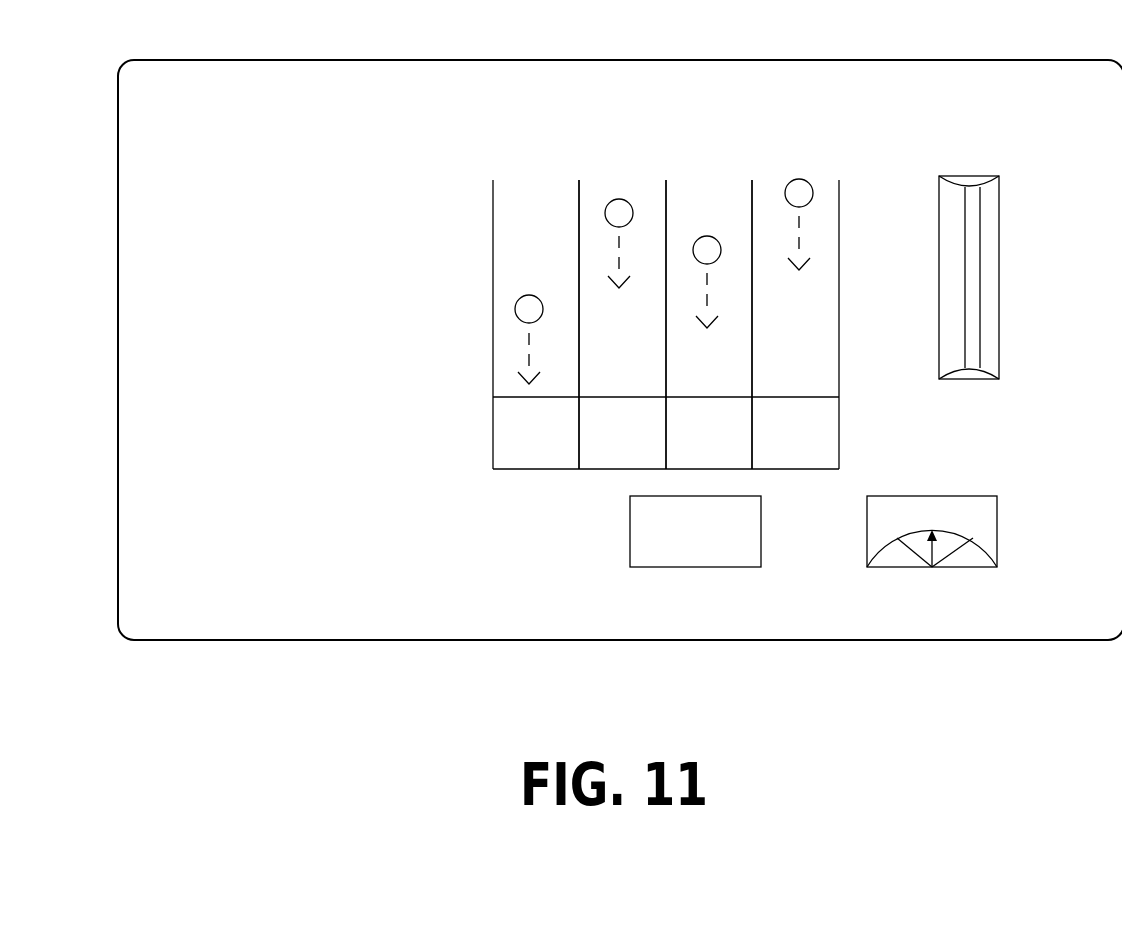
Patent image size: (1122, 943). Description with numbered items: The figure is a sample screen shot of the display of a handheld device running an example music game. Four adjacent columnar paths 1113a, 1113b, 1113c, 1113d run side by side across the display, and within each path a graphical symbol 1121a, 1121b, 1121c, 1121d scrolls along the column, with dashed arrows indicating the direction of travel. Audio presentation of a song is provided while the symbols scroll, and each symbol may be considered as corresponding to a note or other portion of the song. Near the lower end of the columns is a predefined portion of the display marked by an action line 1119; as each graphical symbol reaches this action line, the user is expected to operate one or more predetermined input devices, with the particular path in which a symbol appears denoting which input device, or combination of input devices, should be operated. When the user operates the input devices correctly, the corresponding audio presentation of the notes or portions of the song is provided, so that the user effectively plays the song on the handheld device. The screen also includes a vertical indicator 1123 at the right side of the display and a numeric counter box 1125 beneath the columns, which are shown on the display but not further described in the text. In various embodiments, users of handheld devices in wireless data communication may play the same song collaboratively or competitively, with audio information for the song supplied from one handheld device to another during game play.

The columnar path 1113a is at (525, 150).
The columnar path 1113b is at (625, 150).
The columnar path 1113c is at (713, 150).
The columnar path 1113d is at (800, 150).
The action line 1119 is at (652, 398).
The graphical symbol 1121a is at (539, 297).
The graphical symbol 1121b is at (632, 222).
The graphical symbol 1121c is at (697, 240).
The graphical symbol 1121d is at (811, 183).
The vertical gauge 1123 is at (970, 176).
The score counter 1125 is at (667, 567).